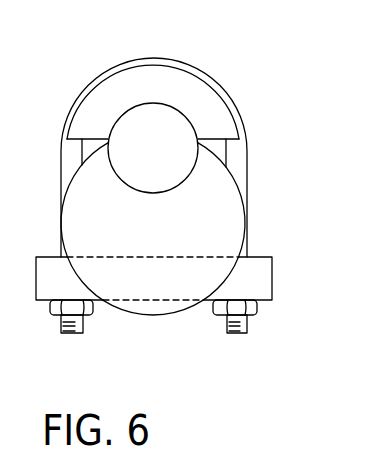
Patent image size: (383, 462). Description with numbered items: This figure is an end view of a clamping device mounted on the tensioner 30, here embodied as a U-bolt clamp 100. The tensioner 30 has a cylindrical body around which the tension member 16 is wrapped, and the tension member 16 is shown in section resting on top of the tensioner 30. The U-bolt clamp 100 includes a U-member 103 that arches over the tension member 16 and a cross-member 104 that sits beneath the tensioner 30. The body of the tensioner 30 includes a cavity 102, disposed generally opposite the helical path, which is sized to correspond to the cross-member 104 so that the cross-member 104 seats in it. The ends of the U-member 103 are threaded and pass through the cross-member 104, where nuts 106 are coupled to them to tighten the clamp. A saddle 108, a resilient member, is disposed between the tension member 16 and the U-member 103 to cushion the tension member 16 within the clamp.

The U-bolt clamp 100 is at (253, 101).
The tension member 16 is at (146, 112).
The tensioner 30 is at (205, 227).
The U-member 103 is at (247, 182).
The saddle 108 is at (187, 88).
The cross-member 104 is at (272, 278).
The nuts 106 is at (92, 312).
The cavity 102 is at (167, 283).